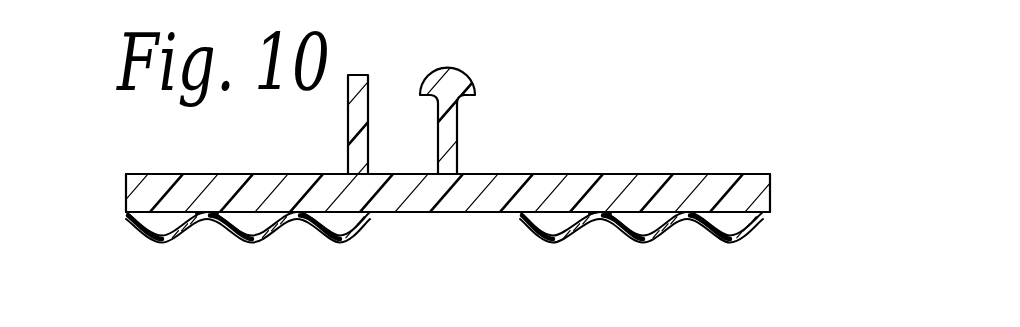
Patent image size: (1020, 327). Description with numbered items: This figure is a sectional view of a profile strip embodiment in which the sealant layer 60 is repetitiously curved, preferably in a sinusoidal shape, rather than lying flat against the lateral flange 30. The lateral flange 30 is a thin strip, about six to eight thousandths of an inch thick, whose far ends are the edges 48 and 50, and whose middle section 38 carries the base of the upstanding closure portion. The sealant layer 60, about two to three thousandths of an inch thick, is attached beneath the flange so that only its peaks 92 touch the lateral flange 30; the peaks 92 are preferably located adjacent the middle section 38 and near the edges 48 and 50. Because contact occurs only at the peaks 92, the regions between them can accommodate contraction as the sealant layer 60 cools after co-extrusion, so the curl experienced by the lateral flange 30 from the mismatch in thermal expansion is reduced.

The lateral flange 30 is at (778, 190).
The middle section 38 is at (477, 212).
The edge 48 is at (770, 173).
The edge 50 is at (125, 197).
The sealant layer 60 is at (775, 226).
The peaks 92 is at (208, 214).